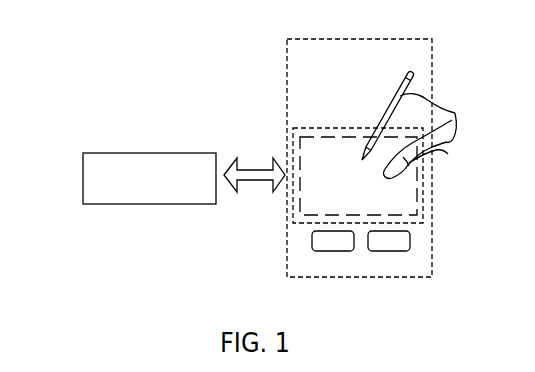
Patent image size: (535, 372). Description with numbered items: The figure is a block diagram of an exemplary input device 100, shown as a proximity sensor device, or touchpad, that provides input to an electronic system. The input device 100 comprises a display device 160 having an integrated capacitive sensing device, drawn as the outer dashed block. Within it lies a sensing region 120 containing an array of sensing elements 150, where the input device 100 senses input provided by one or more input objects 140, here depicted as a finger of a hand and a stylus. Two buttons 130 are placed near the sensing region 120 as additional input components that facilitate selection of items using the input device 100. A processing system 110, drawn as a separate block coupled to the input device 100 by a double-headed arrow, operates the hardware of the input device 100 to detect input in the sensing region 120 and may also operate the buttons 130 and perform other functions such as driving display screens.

The input device 100 is at (250, 62).
The processing system 110 is at (83, 172).
The sensing region 120 is at (424, 185).
The buttons 130 is at (335, 251).
The input objects 140 is at (455, 113).
The sensing elements 150 is at (325, 136).
The display device 160 is at (432, 58).